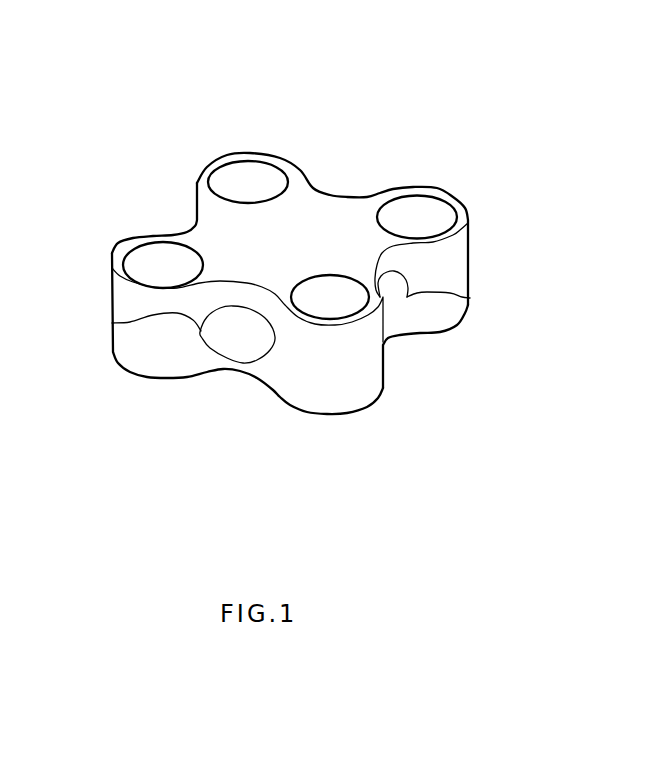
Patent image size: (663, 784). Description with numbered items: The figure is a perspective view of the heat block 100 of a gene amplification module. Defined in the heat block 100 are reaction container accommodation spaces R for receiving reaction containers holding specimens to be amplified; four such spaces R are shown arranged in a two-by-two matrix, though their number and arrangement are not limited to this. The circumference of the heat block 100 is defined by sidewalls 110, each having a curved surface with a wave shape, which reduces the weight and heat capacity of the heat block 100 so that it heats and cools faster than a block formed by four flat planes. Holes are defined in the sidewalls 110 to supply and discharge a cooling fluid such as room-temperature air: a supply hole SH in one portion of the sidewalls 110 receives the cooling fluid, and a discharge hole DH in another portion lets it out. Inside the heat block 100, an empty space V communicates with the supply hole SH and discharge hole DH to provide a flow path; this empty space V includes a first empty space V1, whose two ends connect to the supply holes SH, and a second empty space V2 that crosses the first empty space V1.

The heat block 100 is at (298, 226).
The sidewall 110 is at (165, 358).
The reaction container accommodation space R is at (241, 181).
The empty space V is at (306, 211).
The first empty space V1 is at (246, 331).
The second empty space V2 is at (397, 293).
The supply hole SH is at (112, 323).
The discharge hole DH is at (470, 298).